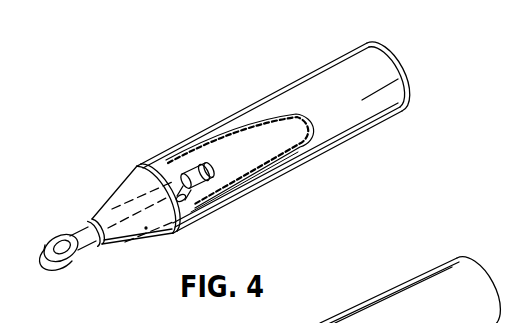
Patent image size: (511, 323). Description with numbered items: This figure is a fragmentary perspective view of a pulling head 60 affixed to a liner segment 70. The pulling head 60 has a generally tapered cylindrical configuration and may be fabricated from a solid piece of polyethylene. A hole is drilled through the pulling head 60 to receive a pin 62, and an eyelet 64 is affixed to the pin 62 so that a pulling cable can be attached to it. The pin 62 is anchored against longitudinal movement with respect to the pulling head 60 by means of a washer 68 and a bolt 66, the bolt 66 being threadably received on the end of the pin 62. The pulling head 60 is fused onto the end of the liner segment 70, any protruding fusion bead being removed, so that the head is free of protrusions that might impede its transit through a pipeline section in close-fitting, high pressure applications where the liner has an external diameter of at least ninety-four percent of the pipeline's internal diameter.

The pulling head 60 is at (146, 229).
The pin 62 is at (116, 200).
The eyelet 64 is at (64, 257).
The bolt 66 is at (182, 165).
The washer 68 is at (153, 166).
The liner segment 70 is at (307, 87).